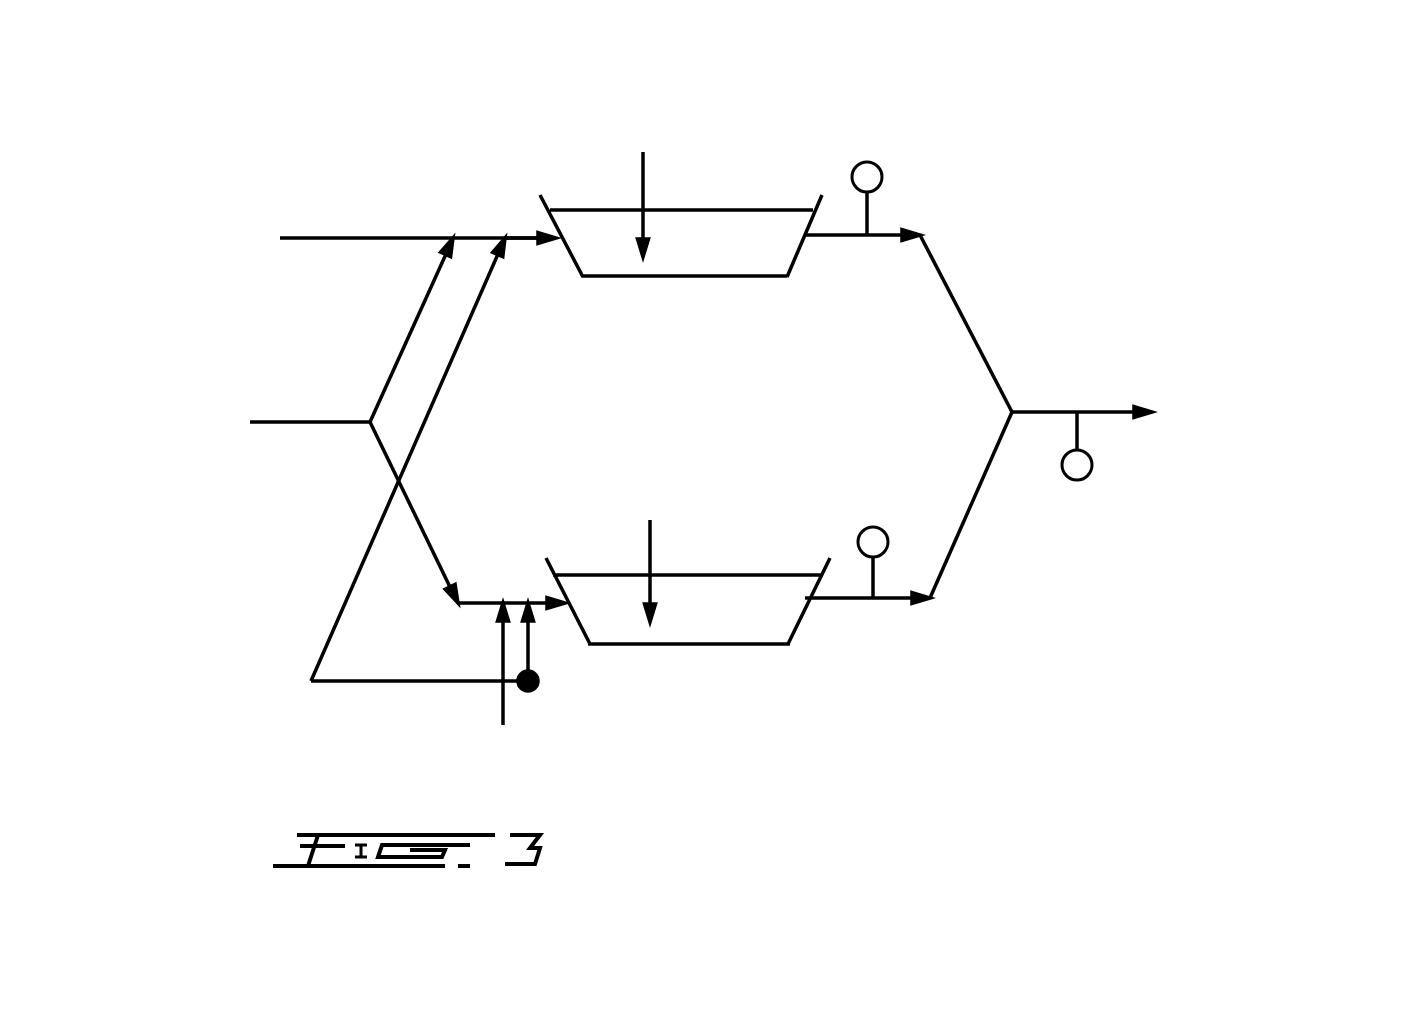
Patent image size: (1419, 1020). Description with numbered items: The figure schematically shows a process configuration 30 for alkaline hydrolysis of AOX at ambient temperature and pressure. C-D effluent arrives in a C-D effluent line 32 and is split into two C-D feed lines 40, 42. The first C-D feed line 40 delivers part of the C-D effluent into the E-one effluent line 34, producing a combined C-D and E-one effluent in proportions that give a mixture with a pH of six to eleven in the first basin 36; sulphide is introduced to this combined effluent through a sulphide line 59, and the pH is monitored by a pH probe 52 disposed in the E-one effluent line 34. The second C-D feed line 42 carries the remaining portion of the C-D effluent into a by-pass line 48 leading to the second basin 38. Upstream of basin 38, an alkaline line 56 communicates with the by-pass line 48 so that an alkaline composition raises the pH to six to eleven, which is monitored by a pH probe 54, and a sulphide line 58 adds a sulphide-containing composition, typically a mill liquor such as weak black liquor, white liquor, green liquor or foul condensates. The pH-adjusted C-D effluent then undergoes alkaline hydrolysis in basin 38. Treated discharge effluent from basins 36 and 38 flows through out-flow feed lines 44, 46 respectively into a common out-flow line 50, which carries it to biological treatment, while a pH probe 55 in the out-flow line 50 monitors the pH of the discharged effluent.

The process configuration 30 is at (726, 409).
The C_D effluent line 32 is at (245, 410).
The E_1 effluent line 34 is at (346, 250).
The basin 36 is at (589, 291).
The basin 38 is at (776, 653).
The C_D feed line 40 is at (397, 336).
The C_D feed line 42 is at (437, 518).
The out-flow feed line 44 is at (975, 302).
The out-flow feed line 46 is at (985, 529).
The by-pass line 48 is at (490, 592).
The out-flow line 50 is at (1053, 398).
The pH probe 52 is at (889, 190).
The pH probe 54 is at (898, 524).
The pH probe 55 is at (1100, 485).
The alkaline line 56 is at (488, 670).
The sulphide line 58 is at (545, 660).
The sulphide line 59 is at (516, 254).